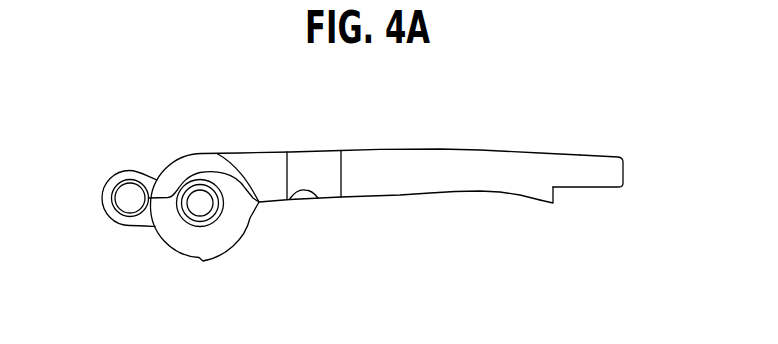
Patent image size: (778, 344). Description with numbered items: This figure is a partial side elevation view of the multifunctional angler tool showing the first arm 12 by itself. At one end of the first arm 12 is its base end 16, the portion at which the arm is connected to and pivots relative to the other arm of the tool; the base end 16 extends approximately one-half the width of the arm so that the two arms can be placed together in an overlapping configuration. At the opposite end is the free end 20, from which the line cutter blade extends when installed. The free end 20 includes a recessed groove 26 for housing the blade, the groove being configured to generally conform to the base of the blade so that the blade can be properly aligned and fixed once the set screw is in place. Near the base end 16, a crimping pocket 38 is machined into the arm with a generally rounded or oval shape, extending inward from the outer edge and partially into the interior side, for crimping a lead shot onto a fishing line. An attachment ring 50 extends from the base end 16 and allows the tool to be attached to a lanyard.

The first arm 12 is at (412, 161).
The base end 16 is at (180, 238).
The free end 20 is at (590, 163).
The recessed groove 26 is at (570, 192).
The crimping pocket 38 is at (312, 192).
The attachment ring 50 is at (118, 178).